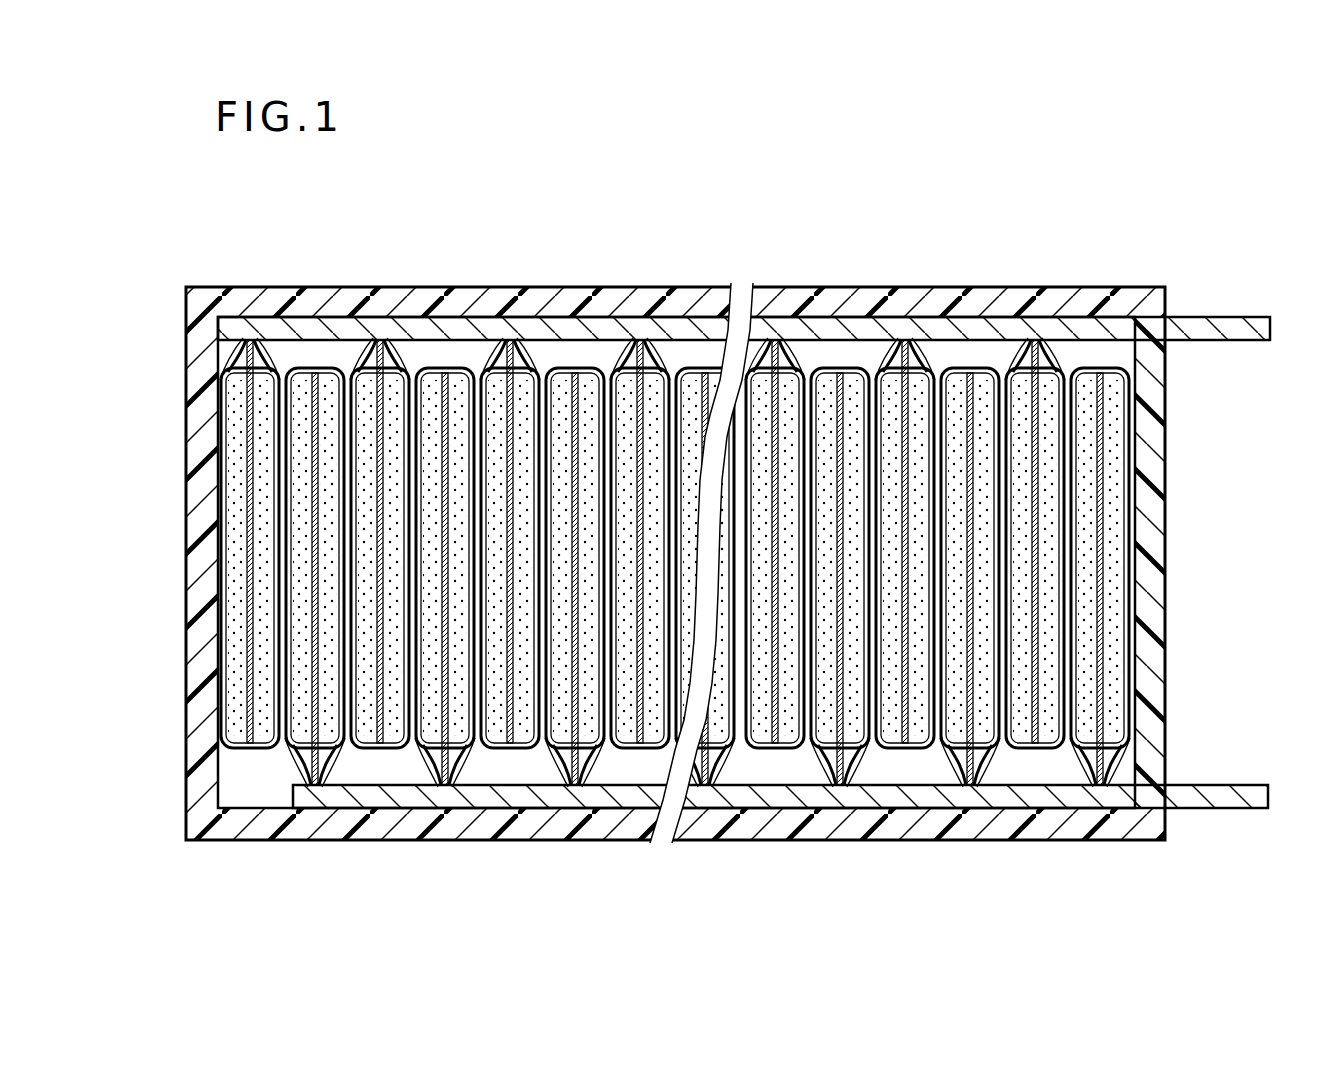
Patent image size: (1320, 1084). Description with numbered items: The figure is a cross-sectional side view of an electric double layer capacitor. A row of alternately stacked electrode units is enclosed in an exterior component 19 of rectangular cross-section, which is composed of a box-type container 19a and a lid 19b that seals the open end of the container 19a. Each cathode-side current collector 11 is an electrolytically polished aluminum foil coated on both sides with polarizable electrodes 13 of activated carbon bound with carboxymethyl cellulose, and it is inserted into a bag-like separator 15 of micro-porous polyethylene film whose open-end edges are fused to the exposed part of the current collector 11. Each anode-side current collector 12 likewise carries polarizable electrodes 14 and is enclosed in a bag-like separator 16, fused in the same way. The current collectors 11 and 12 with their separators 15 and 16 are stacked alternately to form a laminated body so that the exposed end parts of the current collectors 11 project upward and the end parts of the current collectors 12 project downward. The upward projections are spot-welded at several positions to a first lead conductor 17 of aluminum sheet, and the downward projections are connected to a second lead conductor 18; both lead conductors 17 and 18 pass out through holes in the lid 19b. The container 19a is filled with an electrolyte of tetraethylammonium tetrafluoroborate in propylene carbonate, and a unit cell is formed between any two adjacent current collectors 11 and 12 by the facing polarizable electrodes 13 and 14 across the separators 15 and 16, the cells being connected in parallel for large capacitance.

The current collector 11 is at (252, 450).
The current collector 12 is at (314, 740).
The polarizable electrode 13 is at (263, 597).
The polarizable electrode 14 is at (327, 672).
The separator 15 is at (218, 378).
The separator 16 is at (305, 370).
The first lead conductor 17 is at (1208, 320).
The second lead conductor 18 is at (1218, 808).
The exterior component 19 is at (728, 508).
The container 19a is at (897, 300).
The lid 19b is at (1153, 402).